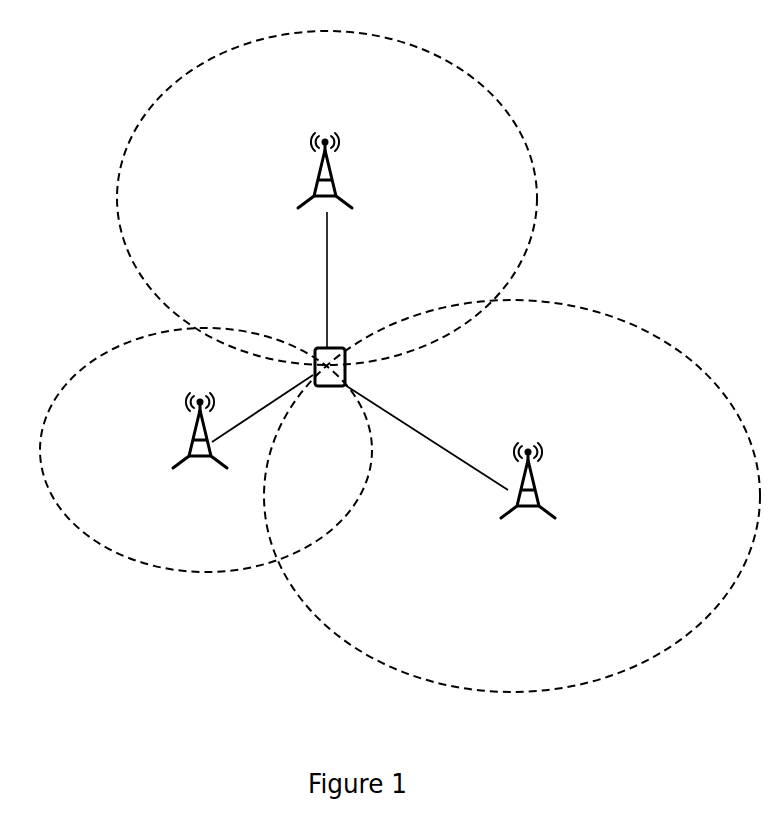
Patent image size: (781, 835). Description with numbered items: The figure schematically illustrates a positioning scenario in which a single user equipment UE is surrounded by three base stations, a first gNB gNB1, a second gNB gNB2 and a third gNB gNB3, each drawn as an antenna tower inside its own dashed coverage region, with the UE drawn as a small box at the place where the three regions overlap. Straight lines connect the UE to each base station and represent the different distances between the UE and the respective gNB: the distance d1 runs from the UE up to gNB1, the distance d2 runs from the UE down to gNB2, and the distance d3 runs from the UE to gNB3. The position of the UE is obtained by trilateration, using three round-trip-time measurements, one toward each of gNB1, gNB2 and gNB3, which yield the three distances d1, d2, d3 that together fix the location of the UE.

The gNB gNB1 is at (288, 187).
The gNB gNB2 is at (496, 496).
The gNB gNB3 is at (167, 447).
The element UE is at (316, 383).
The distance d1 is at (342, 280).
The distance d2 is at (426, 437).
The distance d3 is at (262, 408).